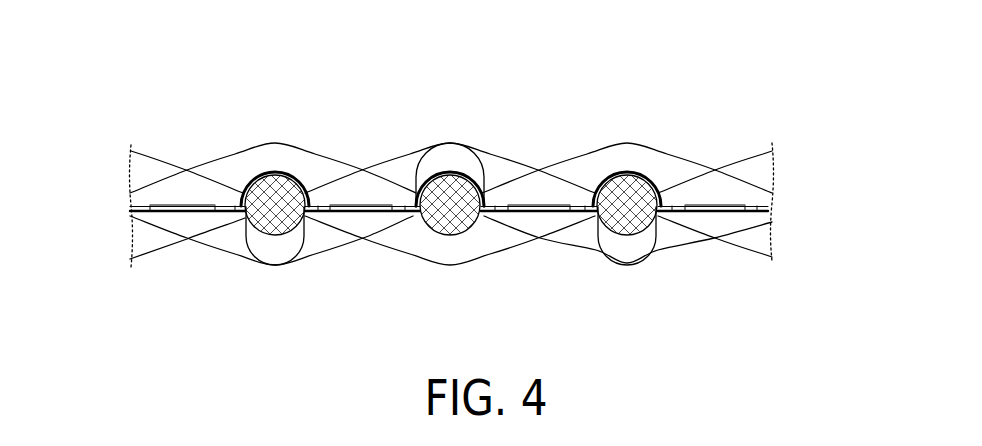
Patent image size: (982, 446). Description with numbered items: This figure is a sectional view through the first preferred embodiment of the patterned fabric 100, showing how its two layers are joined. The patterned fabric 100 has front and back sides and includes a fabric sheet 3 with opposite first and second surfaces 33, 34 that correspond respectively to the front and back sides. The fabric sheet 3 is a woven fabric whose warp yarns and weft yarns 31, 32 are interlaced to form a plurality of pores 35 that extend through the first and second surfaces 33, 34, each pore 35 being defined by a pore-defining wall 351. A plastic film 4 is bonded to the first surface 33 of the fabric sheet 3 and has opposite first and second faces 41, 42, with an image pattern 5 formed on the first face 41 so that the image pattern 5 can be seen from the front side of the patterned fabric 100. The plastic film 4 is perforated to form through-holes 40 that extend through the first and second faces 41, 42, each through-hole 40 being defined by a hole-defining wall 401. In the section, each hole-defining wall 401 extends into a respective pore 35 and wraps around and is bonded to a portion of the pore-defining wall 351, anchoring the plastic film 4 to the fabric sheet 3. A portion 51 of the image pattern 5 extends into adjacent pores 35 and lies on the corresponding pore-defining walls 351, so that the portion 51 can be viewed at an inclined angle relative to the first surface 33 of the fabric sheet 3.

The patterned fabric 100 is at (612, 47).
The fabric sheet 3 is at (167, 252).
The warp yarns 31 is at (757, 222).
The weft yarns 32 is at (645, 224).
The first surface 33 is at (209, 163).
The second surface 34 is at (272, 238).
The pores 35 is at (331, 181).
The pore-defining wall 351 is at (286, 213).
The plastic film 4 is at (657, 177).
The through-holes 40 is at (367, 191).
The hole-defining wall 401 is at (508, 180).
The first face 41 is at (482, 192).
The second face 42 is at (486, 210).
The image pattern 5 is at (268, 162).
The portion of the image pattern 51 is at (307, 173).